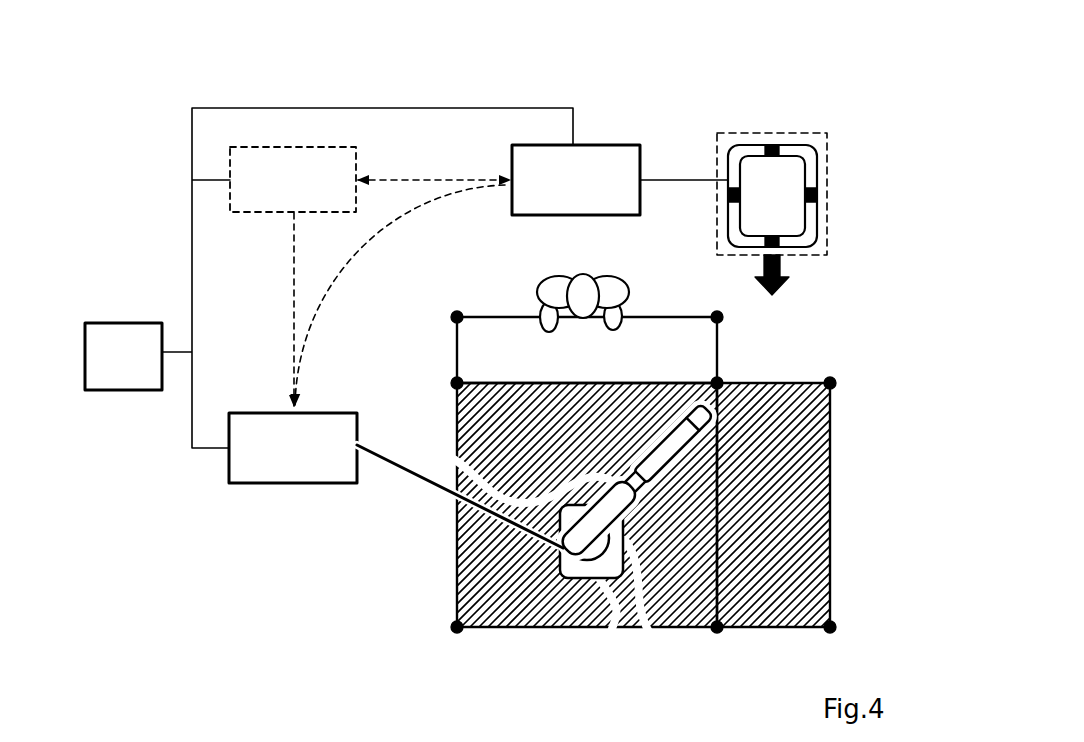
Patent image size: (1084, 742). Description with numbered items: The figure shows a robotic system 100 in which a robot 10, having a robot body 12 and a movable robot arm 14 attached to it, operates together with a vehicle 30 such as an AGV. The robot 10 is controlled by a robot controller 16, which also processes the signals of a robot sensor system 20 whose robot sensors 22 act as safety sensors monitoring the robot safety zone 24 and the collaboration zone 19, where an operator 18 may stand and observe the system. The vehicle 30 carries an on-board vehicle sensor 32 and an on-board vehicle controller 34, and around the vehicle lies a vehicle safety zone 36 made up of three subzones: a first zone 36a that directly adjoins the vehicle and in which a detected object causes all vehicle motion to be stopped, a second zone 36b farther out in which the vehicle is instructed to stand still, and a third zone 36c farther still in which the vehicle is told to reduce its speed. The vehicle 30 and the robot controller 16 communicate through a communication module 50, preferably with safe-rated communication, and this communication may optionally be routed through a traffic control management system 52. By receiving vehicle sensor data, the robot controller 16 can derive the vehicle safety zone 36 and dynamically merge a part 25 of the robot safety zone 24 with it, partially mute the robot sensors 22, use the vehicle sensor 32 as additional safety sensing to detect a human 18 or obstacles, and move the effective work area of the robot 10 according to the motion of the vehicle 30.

The robotic system 100 is at (225, 84).
The traffic control management system 52 is at (357, 151).
The vehicle controller 34 is at (590, 145).
The vehicle 30 is at (814, 172).
The vehicle safety zone 36 is at (814, 182).
The first zone 36a is at (771, 152).
The second zone 36b is at (818, 242).
The third zone 36c is at (818, 212).
The vehicle sensor 32 is at (776, 157).
The communication module 50 is at (120, 323).
The robot controller 16 is at (254, 484).
The robot sensor system 20 is at (637, 539).
The robot safety zone 24 is at (454, 545).
The part of the robot safety zone 25 is at (833, 506).
The collaboration zone 19 is at (453, 347).
The operator 18 is at (538, 281).
The robot sensors 22 is at (456, 316).
The robot 10 is at (643, 600).
The robot body 12 is at (625, 540).
The robot arm 14 is at (624, 500).